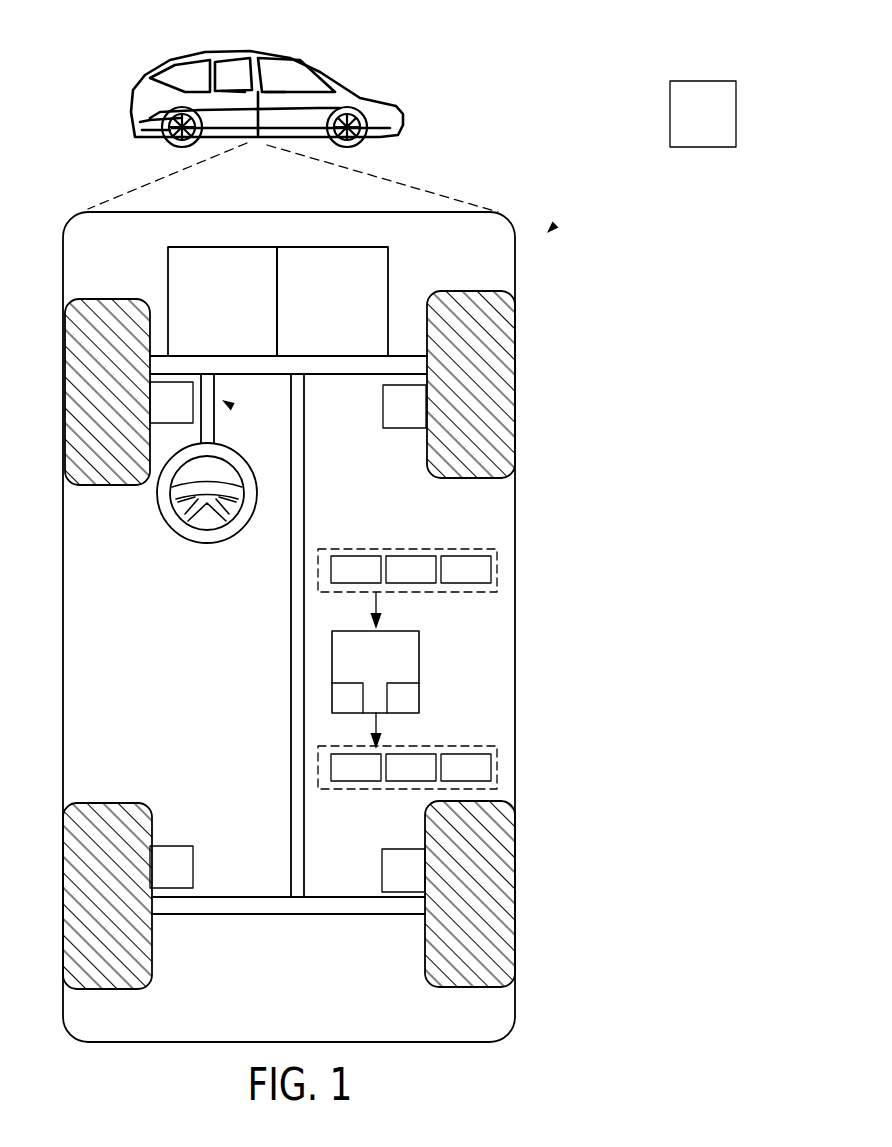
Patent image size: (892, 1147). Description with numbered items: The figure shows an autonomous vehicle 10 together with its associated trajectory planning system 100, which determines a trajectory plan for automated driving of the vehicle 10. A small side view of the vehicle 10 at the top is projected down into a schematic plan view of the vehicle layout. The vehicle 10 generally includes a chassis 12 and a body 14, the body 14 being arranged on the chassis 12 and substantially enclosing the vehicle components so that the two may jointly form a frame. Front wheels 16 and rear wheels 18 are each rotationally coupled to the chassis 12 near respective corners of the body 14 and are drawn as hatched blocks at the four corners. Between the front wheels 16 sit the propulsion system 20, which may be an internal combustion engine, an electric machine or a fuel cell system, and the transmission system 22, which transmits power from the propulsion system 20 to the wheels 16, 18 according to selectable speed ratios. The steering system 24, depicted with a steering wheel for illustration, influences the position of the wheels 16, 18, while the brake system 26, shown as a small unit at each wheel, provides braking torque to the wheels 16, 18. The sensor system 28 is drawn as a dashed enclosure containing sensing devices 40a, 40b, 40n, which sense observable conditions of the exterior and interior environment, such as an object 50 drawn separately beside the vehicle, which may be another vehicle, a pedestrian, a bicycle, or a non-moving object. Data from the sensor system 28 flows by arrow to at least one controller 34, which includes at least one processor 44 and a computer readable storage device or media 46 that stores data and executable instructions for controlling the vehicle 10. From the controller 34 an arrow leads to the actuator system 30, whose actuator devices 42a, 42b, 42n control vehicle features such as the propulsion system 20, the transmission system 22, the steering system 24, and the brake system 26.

The vehicle 10 is at (131, 108).
The trajectory planning system 100 is at (552, 228).
The object 50 is at (703, 81).
The body 14 is at (63, 693).
The front wheels 16 is at (104, 306).
The rear wheels 18 is at (140, 935).
The propulsion system 20 is at (188, 278).
The transmission system 22 is at (367, 290).
The brake system 26 is at (175, 405).
The chassis 12 is at (291, 821).
The steering system 24 is at (226, 402).
The sensor system 28 is at (439, 545).
The sensing device 40a is at (351, 565).
The sensing device 40b is at (408, 565).
The sensing device 40n is at (462, 565).
The controller 34 is at (330, 702).
The processor 44 is at (347, 706).
The computer readable storage device or media 46 is at (403, 694).
The actuator system 30 is at (439, 769).
The actuator device 42a is at (358, 767).
The actuator device 42b is at (403, 767).
The actuator device 42n is at (458, 765).